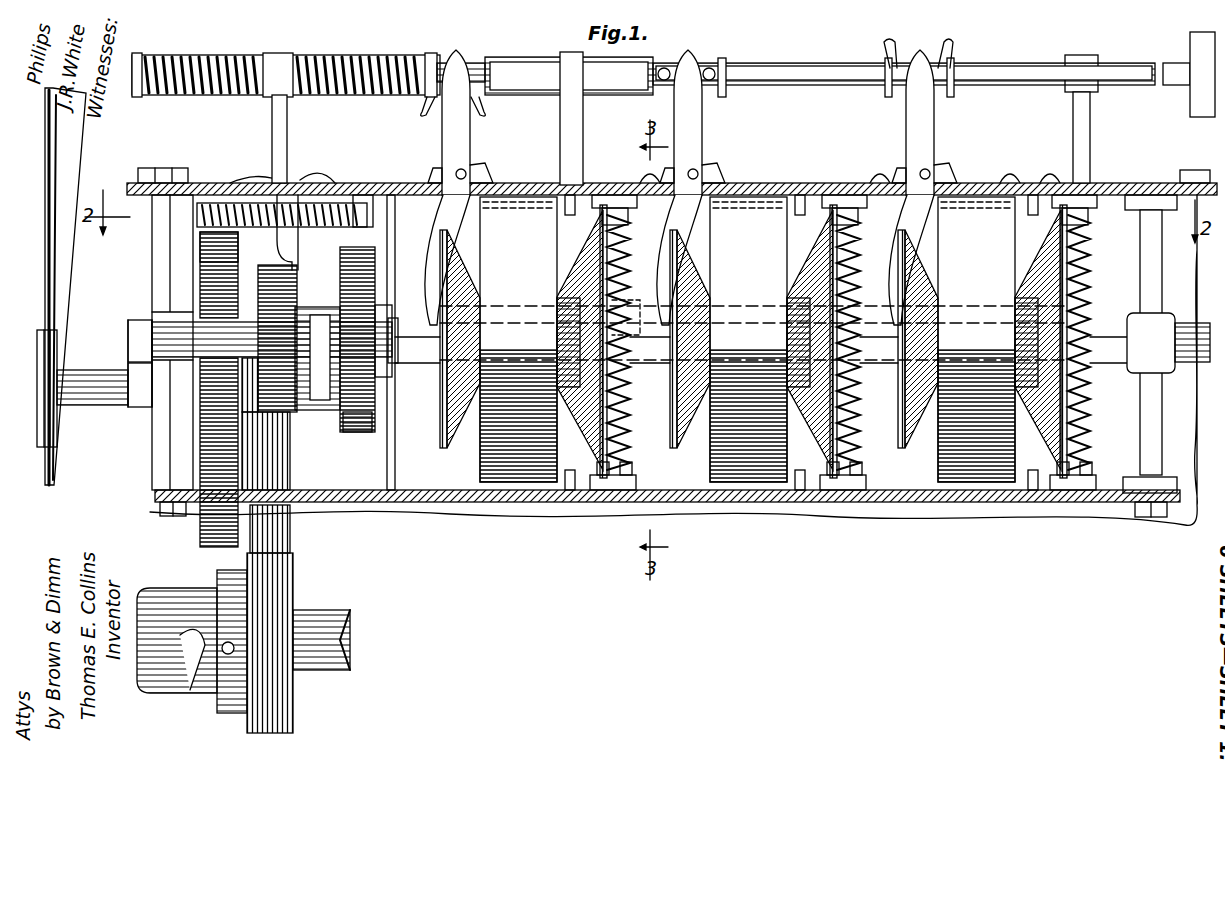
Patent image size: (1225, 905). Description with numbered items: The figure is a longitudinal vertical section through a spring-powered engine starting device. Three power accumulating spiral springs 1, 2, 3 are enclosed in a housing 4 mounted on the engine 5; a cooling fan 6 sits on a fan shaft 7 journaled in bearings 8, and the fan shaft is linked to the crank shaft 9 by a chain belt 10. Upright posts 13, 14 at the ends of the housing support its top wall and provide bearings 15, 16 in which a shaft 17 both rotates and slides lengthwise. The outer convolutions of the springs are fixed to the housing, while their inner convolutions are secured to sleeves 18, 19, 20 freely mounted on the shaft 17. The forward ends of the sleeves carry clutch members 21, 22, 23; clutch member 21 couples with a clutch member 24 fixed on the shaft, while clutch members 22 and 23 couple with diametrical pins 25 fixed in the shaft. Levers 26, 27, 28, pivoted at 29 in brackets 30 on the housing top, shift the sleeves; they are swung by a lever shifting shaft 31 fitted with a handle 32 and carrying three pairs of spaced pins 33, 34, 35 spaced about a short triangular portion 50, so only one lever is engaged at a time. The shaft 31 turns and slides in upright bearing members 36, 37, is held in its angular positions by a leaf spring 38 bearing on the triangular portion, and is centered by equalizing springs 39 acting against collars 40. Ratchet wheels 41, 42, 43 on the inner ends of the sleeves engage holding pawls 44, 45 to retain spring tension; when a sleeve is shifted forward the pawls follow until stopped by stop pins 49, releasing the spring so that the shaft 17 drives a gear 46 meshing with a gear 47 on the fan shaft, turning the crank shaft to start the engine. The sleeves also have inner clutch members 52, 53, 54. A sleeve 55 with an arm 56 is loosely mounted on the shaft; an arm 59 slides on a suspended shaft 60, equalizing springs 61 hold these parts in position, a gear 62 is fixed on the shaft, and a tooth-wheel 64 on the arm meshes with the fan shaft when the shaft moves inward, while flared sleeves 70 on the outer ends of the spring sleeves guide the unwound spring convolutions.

The spiral spring 1 is at (500, 445).
The spiral spring 2 is at (725, 445).
The spiral spring 3 is at (950, 445).
The housing 4 is at (378, 490).
The engine 5 is at (480, 520).
The cooling fan 6 is at (60, 240).
The fan shaft 7 is at (100, 372).
The bearings 8 is at (140, 407).
The crank shaft 9 is at (348, 640).
The chain belt 10 is at (275, 462).
The upright post 13 is at (170, 452).
The upright post 14 is at (1150, 437).
The bearing 15 is at (172, 355).
The bearing 16 is at (1152, 330).
The shaft 17 is at (138, 322).
The sleeve 18 is at (520, 305).
The sleeve 19 is at (745, 300).
The sleeve 20 is at (968, 298).
The clutch member 21 is at (455, 370).
The clutch member 22 is at (672, 375).
The clutch member 23 is at (905, 375).
The clutch member 24 is at (395, 328).
The pin 25 is at (618, 320).
The lever 26 is at (462, 158).
The lever 27 is at (694, 158).
The lever 28 is at (928, 156).
The pivot 29 is at (468, 172).
The bracket 30 is at (433, 175).
The lever shifting shaft 31 is at (760, 62).
The handle 32 is at (1188, 40).
The spaced pins 33 is at (436, 104).
The spaced pins 34 is at (690, 65).
The spaced pins 35 is at (897, 48).
The upright bearing member 36 is at (280, 128).
The upright bearing member 37 is at (1082, 140).
The leaf spring 38 is at (576, 125).
The equalizing springs 39 is at (222, 55).
The collars 40 is at (138, 55).
The ratchet wheel 41 is at (598, 432).
The ratchet wheel 42 is at (828, 432).
The ratchet wheel 43 is at (1058, 432).
The holding pawl 44 is at (612, 210).
The holding pawl 45 is at (605, 480).
The gear 46 is at (293, 354).
The gear 47 is at (232, 238).
The stop pin 49 is at (575, 183).
The triangular portion 50 is at (512, 62).
The clutch member 52 is at (622, 268).
The clutch member 53 is at (810, 290).
The clutch member 54 is at (1070, 315).
The sleeve 55 is at (360, 300).
The arm 56 is at (325, 285).
The arm 59 is at (318, 185).
The shaft 60 is at (258, 185).
The equalizing springs 61 is at (218, 205).
The gear 62 is at (358, 420).
The tooth-wheel 64 is at (255, 300).
The flared sleeve 70 is at (443, 430).